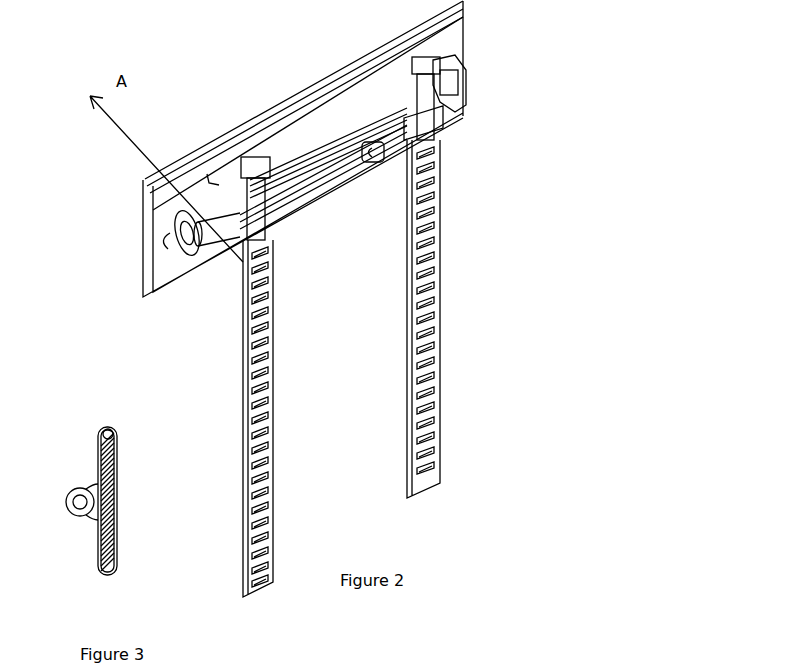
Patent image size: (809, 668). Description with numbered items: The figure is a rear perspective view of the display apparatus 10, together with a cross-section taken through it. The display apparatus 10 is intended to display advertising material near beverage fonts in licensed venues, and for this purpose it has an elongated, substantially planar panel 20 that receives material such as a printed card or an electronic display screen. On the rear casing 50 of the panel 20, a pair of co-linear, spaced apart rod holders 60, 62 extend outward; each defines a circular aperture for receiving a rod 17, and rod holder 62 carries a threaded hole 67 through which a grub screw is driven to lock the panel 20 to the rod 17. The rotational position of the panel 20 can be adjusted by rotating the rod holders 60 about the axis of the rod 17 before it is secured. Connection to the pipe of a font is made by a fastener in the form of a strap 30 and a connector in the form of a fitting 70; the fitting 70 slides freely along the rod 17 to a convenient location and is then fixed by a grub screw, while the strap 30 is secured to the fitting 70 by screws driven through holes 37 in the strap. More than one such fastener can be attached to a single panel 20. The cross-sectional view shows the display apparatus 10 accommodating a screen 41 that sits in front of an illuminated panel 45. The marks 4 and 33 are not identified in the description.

In FIG. 2, the display apparatus 10 is at (534, 310).
In FIG. 2, the panel 20 is at (466, 12).
In FIG. 2, the strap 30 is at (442, 458).
In FIG. 2, the holes 37 is at (472, 98).
In FIG. 2, the rod holder 62 is at (467, 67).
In FIG. 2, the threaded hole 67 is at (472, 86).
In FIG. 2, the fitting 70 is at (394, 142).
In FIG. 2, the rod 17 is at (305, 186).
In FIG. 2, the rod holder 60 is at (207, 262).
In FIG. 2, the hub 4 is at (220, 258).
In FIG. 3, the rear casing 50 is at (97, 503).
In FIG. 3, the pin hole 33 is at (115, 433).
In FIG. 3, the illuminated panel 45 is at (115, 482).
In FIG. 3, the screen 41 is at (115, 547).